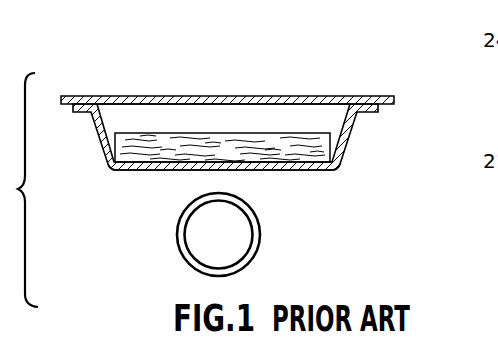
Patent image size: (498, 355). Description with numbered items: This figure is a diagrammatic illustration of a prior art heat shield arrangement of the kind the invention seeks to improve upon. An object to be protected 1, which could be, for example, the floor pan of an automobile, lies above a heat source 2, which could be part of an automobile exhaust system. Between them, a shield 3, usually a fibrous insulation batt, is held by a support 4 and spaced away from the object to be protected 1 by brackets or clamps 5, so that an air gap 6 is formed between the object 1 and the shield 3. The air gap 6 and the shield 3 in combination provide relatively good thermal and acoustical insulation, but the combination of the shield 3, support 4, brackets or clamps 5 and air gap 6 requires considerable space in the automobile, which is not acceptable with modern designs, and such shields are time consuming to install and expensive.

The object to be protected 1 is at (272, 97).
The heat source 2 is at (260, 235).
The shield 3 is at (295, 153).
The support 4 is at (164, 170).
The brackets or clamps 5 is at (100, 142).
The air gap 6 is at (205, 113).